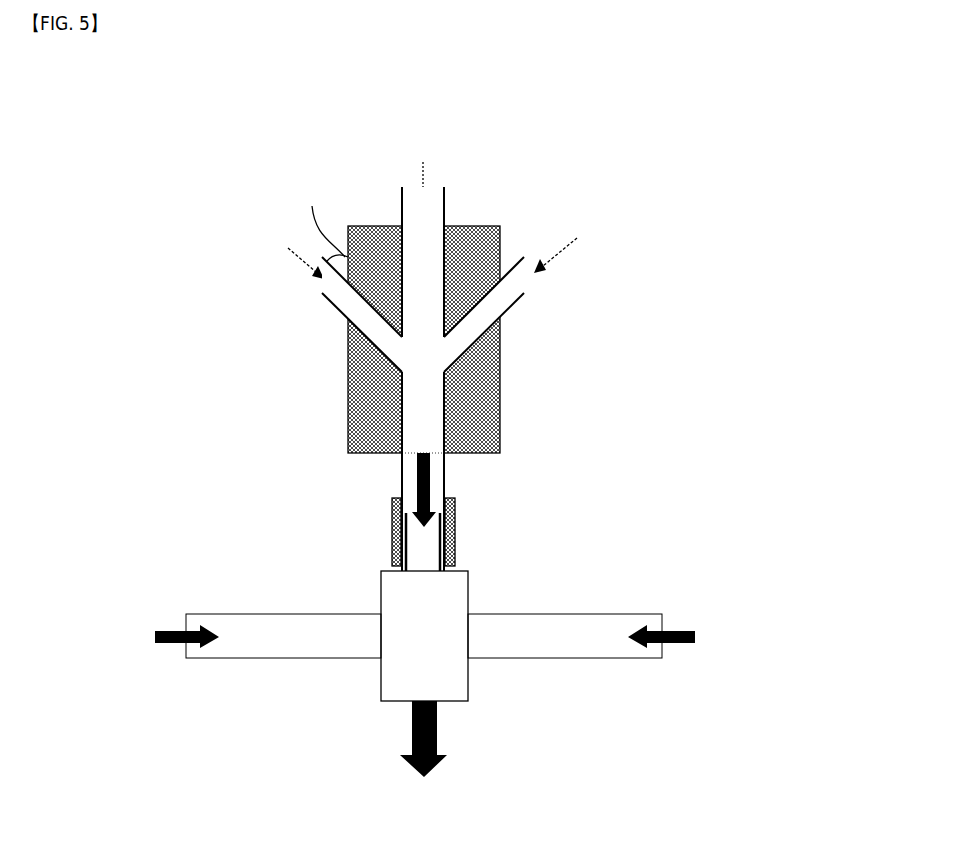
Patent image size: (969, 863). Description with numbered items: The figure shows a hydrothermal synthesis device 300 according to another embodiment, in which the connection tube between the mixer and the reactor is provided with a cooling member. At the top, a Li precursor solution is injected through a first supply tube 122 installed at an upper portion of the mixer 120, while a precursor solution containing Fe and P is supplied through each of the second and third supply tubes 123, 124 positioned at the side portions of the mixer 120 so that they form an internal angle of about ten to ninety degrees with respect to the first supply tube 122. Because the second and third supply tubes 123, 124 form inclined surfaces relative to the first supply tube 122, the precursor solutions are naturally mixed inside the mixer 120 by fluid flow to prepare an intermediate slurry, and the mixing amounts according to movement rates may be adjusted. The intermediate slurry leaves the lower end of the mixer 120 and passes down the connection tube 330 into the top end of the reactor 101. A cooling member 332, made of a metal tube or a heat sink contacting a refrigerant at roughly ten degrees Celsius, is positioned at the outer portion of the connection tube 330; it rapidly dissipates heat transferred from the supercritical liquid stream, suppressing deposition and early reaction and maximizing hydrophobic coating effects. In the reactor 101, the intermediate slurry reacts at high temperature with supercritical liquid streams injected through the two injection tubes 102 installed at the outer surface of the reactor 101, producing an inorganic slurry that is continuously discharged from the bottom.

The hydrothermal synthesis device 300 is at (95, 169).
The reactor 101 is at (381, 590).
The injection tubes 102 is at (256, 614).
The mixer 120 is at (348, 388).
The first supply tube 122 is at (402, 208).
The second supply tube 123 is at (332, 307).
The third supply tube 124 is at (526, 303).
The connection tube 330 is at (444, 478).
The cooling member 332 is at (392, 510).